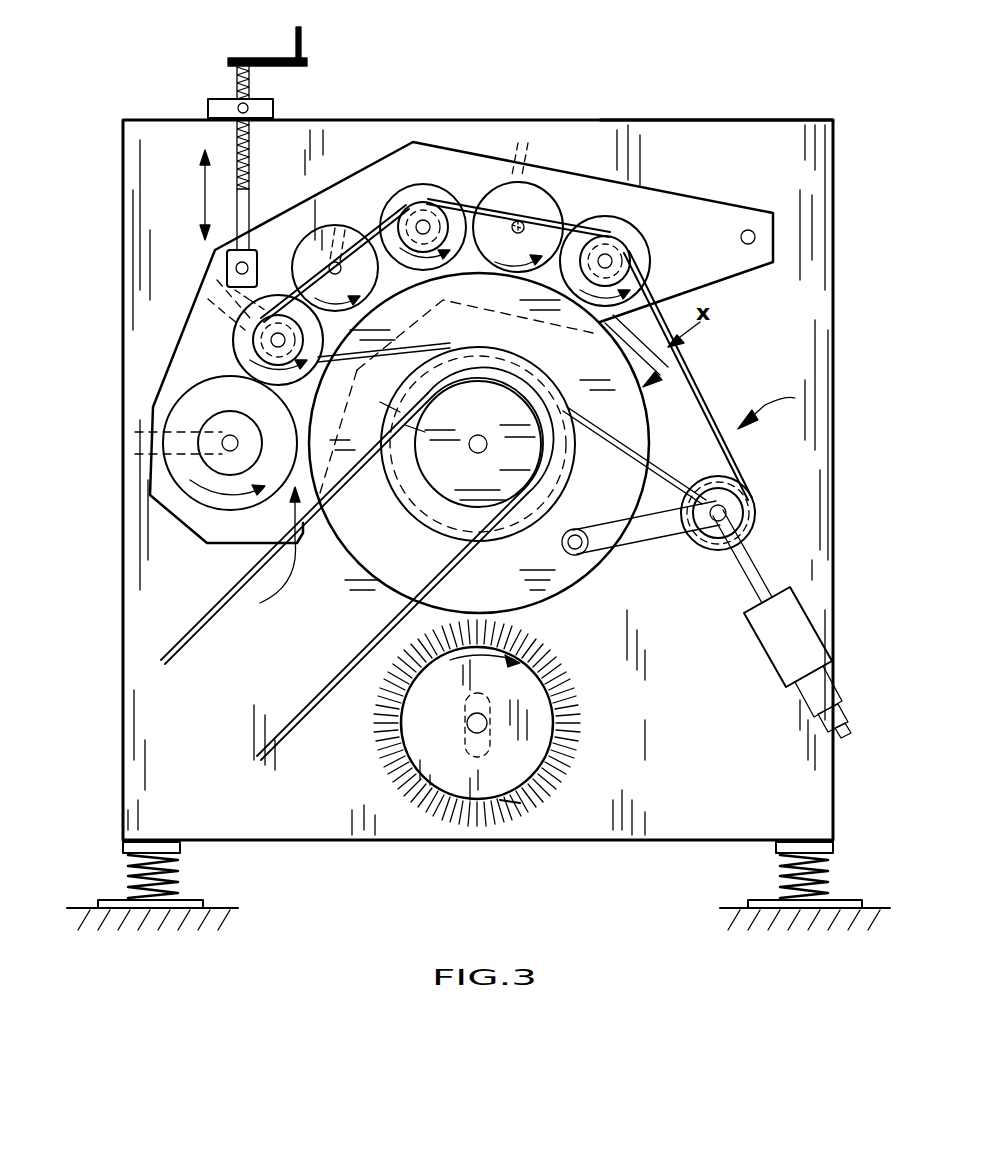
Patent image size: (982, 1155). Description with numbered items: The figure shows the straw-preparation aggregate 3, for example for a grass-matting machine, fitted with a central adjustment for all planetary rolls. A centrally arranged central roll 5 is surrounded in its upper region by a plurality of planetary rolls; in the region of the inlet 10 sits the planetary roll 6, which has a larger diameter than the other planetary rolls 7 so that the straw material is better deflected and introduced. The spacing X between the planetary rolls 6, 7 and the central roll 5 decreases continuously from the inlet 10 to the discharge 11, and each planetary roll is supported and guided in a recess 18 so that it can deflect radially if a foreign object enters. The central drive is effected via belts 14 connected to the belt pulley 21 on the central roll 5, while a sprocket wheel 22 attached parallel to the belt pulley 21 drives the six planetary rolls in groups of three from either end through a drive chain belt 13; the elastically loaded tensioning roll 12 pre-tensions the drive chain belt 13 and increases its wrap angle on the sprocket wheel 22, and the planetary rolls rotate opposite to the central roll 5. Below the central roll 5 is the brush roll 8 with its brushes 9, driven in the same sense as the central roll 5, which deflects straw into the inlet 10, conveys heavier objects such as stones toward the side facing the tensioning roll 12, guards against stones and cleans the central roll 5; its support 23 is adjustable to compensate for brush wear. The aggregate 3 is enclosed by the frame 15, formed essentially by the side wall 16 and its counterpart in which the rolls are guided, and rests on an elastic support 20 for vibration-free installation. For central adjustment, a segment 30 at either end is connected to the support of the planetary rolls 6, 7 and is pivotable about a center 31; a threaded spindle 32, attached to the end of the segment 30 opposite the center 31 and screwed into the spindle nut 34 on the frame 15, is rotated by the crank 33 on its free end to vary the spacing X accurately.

The aggregate 3 is at (445, 115).
The central roll 5 is at (390, 572).
The planetary roll 6 is at (180, 415).
The planetary rolls 7 is at (222, 348).
The brush roll 8 is at (398, 781).
The brushes 9 is at (548, 783).
The inlet 10 is at (237, 527).
The discharge 11 is at (766, 407).
The tensioning roll 12 is at (756, 527).
The drive chain belt 13 is at (690, 365).
The belts 14 is at (188, 645).
The frame 15 is at (703, 118).
The side wall 16 is at (765, 140).
The recess 18 is at (420, 175).
The elastic support 20 is at (168, 912).
The belt pulley 21 is at (520, 473).
The sprocket wheel 22 is at (525, 525).
The support 23 is at (468, 718).
The segment 30 is at (580, 190).
The center 31 is at (757, 237).
The threaded spindle 32 is at (238, 135).
The crank 33 is at (270, 58).
The spindle nut 34 is at (208, 102).